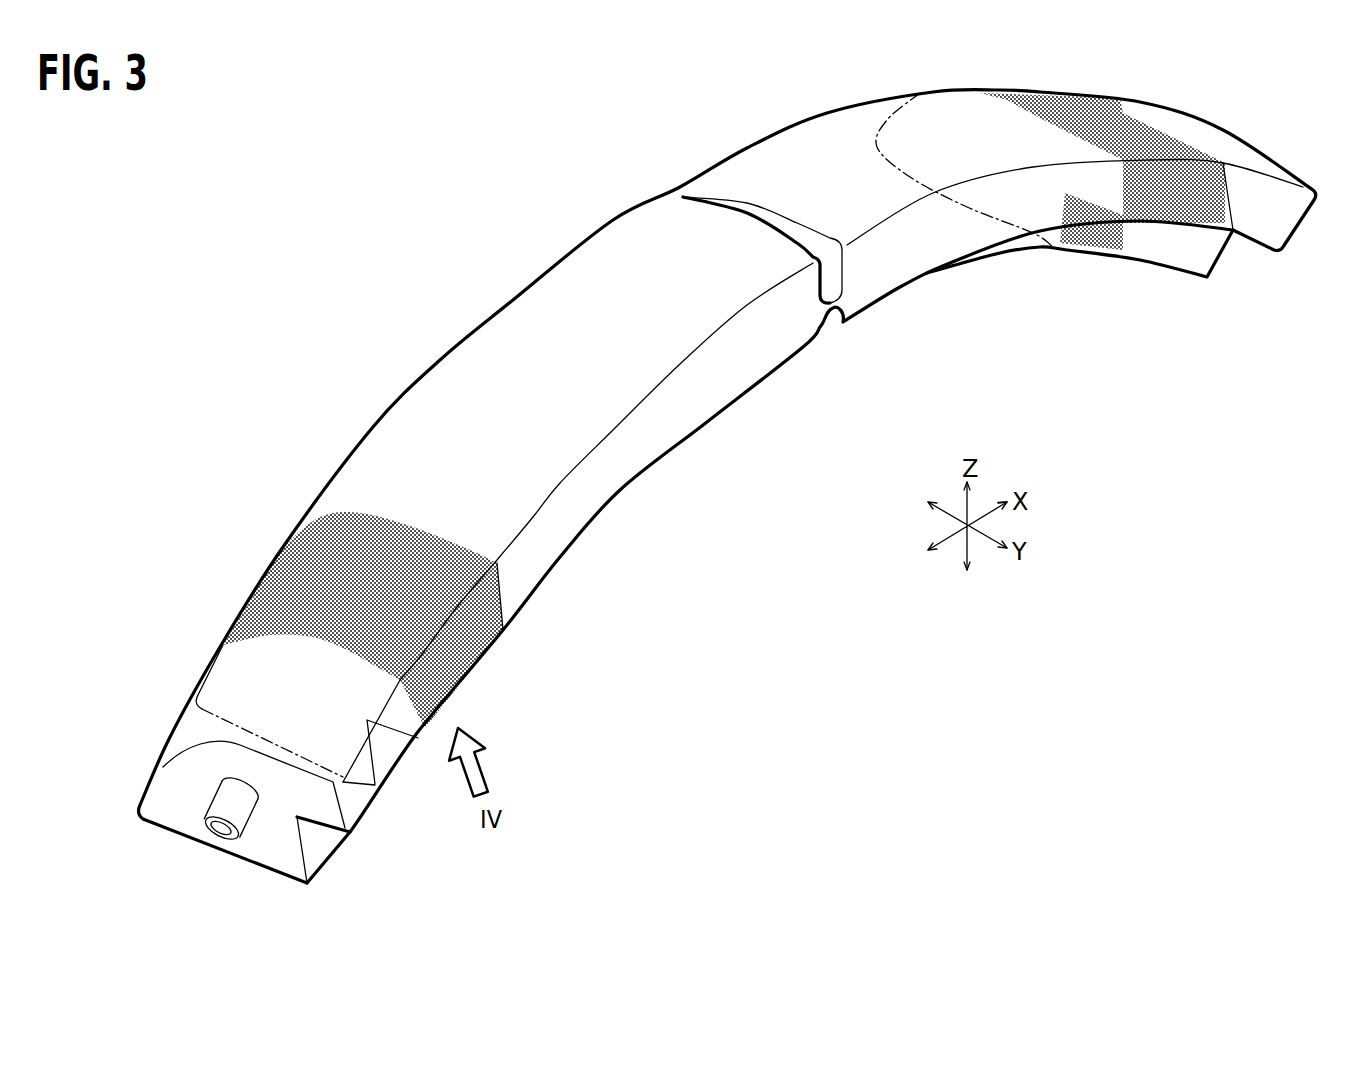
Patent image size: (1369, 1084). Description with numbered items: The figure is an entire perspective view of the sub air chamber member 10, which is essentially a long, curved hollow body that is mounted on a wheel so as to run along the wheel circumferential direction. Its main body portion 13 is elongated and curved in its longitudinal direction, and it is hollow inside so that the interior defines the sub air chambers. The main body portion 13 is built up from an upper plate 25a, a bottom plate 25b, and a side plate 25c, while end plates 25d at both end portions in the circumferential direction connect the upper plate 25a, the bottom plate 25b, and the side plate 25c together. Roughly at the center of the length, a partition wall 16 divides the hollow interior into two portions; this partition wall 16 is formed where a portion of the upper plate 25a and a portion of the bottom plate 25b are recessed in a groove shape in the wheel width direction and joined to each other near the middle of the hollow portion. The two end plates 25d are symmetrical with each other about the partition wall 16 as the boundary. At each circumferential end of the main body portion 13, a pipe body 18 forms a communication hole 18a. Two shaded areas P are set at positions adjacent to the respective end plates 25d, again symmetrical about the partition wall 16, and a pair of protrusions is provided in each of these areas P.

The sub air chamber member 10 is at (613, 168).
The main body portion 13 is at (563, 337).
The partition wall 16 is at (767, 220).
The pipe body 18 is at (223, 802).
The communication hole 18a is at (223, 827).
The upper plate 25a is at (463, 380).
The bottom plate 25b is at (283, 880).
The side plate 25c is at (537, 553).
The end plate 25d is at (257, 847).
The shaded area P is at (353, 563).